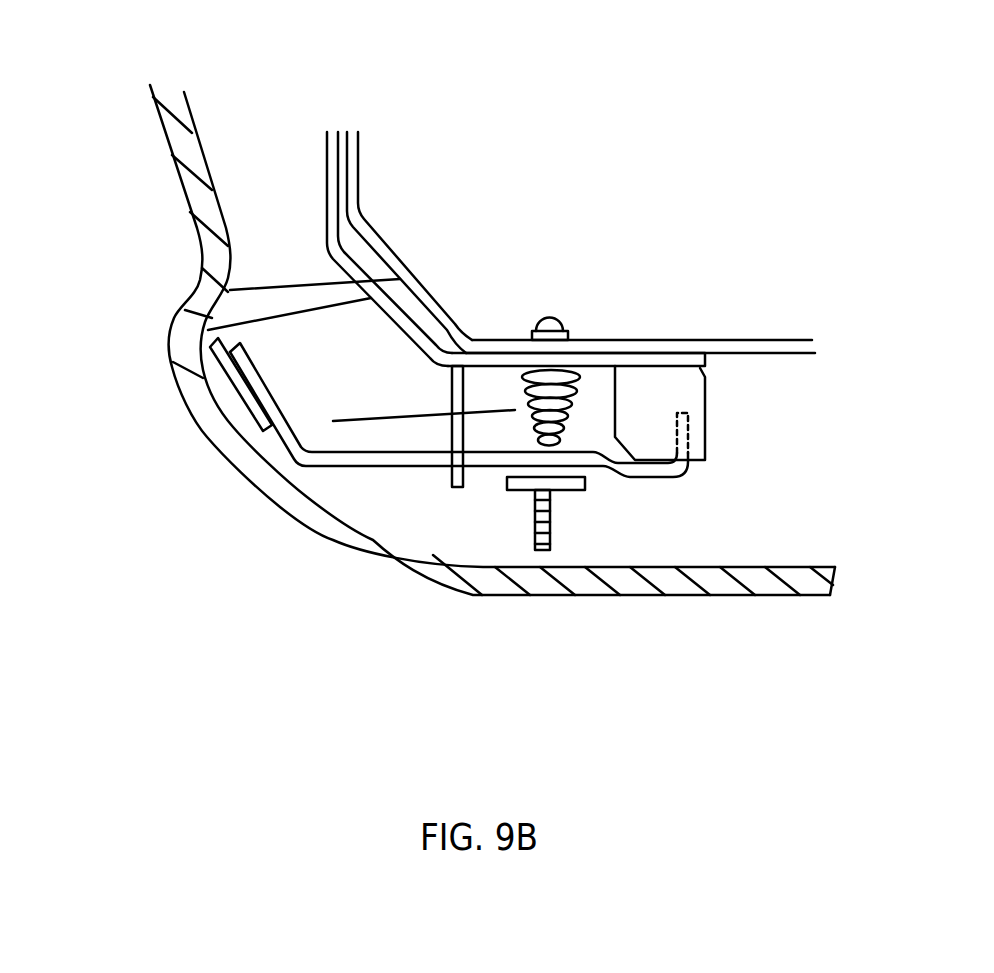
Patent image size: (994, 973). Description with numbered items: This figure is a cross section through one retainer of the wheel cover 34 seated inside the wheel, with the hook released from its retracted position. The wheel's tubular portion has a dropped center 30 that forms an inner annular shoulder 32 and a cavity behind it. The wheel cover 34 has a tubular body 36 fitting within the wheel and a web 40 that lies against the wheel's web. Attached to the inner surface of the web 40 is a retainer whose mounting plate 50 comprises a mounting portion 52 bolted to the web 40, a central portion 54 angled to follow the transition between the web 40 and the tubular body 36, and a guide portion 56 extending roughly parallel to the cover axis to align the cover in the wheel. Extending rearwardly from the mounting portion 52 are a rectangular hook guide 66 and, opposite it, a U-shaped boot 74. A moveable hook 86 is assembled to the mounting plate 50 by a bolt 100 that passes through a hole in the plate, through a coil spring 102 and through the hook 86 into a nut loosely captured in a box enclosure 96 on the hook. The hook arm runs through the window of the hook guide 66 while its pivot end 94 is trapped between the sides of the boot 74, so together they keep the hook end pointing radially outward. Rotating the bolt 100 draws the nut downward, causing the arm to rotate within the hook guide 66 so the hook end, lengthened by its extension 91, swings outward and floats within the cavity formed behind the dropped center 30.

The dropped center 30 is at (203, 272).
The inner annular shoulder 32 is at (288, 283).
The wheel cover 34 is at (795, 337).
The tubular body 36 is at (363, 165).
The web 40 is at (695, 333).
The mounting plate 50 is at (407, 347).
The mounting portion 52 is at (705, 360).
The central portion 54 is at (208, 330).
The guide portion 56 is at (327, 198).
The hook guide 66 is at (452, 487).
The boot 74 is at (705, 408).
The hook 86 is at (365, 468).
The extension 91 is at (230, 372).
The pivot end 94 is at (705, 438).
The box enclosure 96 is at (590, 488).
The bolt 100 is at (550, 543).
The coil spring 102 is at (333, 421).